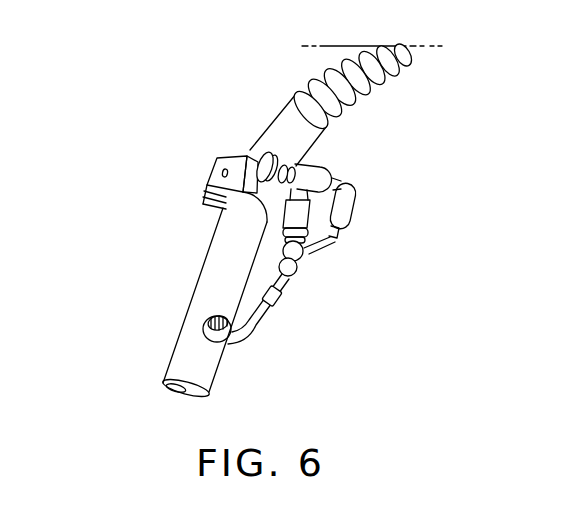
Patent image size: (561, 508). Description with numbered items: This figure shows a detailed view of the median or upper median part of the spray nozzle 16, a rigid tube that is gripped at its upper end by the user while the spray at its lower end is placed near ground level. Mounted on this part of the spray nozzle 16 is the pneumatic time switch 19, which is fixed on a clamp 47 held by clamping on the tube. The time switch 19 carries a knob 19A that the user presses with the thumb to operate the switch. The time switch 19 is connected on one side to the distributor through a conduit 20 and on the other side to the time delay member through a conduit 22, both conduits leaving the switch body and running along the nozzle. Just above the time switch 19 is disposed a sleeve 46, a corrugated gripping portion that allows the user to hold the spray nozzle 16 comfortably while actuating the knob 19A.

The spray nozzle 16 is at (176, 308).
The time switch 19 is at (322, 163).
The knob 19A is at (252, 150).
The conduit 20 is at (333, 238).
The conduit 22 is at (297, 257).
The sleeve 46 is at (312, 75).
The clamp 47 is at (209, 184).